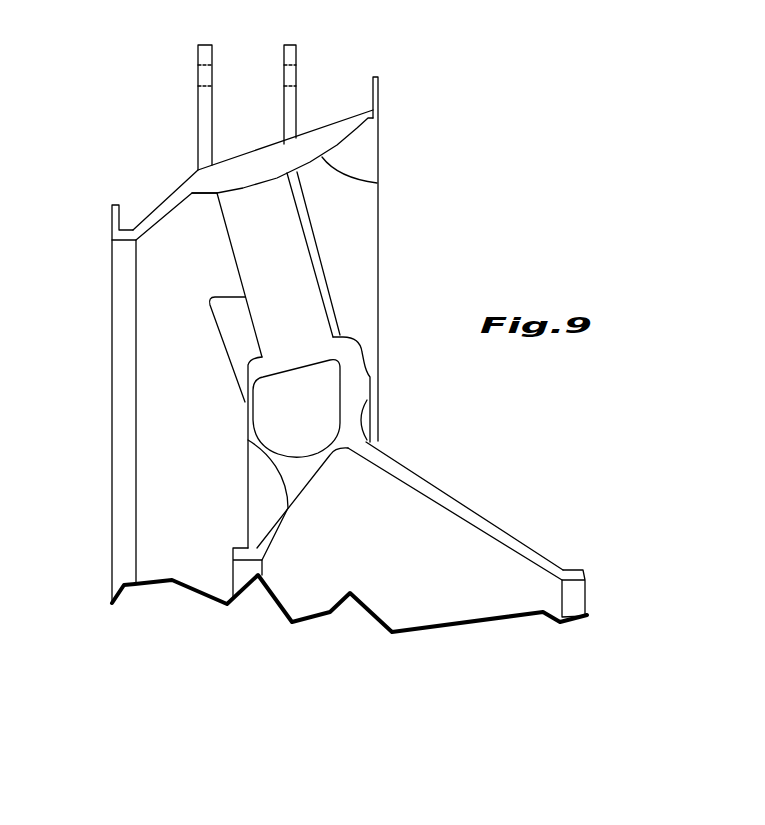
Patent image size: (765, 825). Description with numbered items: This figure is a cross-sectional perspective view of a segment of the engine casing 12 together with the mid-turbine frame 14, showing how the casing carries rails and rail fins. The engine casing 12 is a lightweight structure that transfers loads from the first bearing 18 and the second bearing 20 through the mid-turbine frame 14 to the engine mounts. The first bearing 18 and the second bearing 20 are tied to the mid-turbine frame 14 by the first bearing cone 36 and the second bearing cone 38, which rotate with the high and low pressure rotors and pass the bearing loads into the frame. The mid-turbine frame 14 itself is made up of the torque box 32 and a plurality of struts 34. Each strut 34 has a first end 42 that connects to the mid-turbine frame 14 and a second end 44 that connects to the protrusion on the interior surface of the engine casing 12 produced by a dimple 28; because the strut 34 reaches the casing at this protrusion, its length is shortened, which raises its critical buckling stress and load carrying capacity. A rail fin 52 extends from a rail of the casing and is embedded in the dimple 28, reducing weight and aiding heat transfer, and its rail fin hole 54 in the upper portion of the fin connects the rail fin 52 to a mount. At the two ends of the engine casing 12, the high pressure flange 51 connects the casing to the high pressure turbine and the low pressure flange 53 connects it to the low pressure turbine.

The engine casing 12 is at (158, 192).
The mid-turbine frame 14 is at (244, 411).
The first bearing 18 is at (240, 553).
The second bearing 20 is at (585, 578).
The dimple 28 is at (378, 183).
The torque box 32 is at (360, 386).
The strut 34 is at (293, 272).
The first bearing cone 36 is at (284, 509).
The second bearing cone 38 is at (452, 503).
The first end of strut 42 is at (259, 350).
The second end of strut 44 is at (212, 198).
The high pressure flange 51 is at (112, 218).
The rail fin 52 is at (203, 122).
The low pressure flange 53 is at (378, 92).
The rail fin hole 54 is at (200, 78).